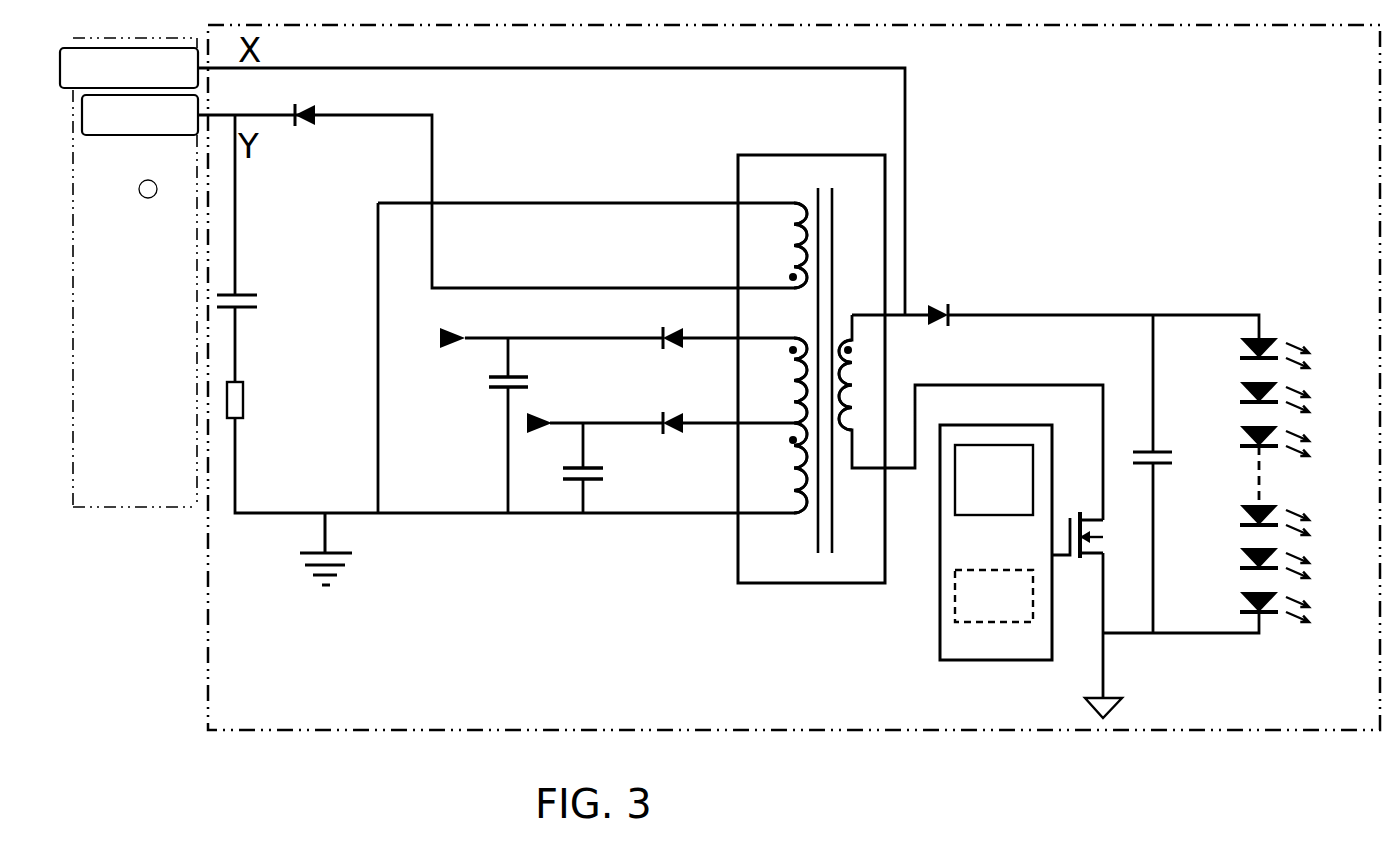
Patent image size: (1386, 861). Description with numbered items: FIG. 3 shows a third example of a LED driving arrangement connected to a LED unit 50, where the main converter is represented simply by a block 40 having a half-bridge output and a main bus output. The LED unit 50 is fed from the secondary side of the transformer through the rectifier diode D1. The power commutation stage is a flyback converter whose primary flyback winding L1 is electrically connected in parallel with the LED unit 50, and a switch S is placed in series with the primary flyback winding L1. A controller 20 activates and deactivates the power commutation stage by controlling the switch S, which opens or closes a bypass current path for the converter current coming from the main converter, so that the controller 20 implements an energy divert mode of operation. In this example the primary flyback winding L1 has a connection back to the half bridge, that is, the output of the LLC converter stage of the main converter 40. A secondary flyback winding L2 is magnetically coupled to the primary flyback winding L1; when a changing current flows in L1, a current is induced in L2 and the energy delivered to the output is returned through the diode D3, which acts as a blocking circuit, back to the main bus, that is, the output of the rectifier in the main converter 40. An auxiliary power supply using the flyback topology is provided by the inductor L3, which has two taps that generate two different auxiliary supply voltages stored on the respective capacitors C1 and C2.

The controller 20 is at (940, 628).
The main converter 40 is at (138, 507).
The LED unit 50 is at (1288, 312).
The rectifier diode D1 is at (931, 303).
The diode D3 is at (315, 136).
The capacitor C1 is at (495, 393).
The capacitor C2 is at (601, 474).
The primary flyback winding L1 is at (860, 385).
The secondary flyback winding L2 is at (776, 245).
The inductor L3 is at (782, 425).
The switch S is at (1088, 538).